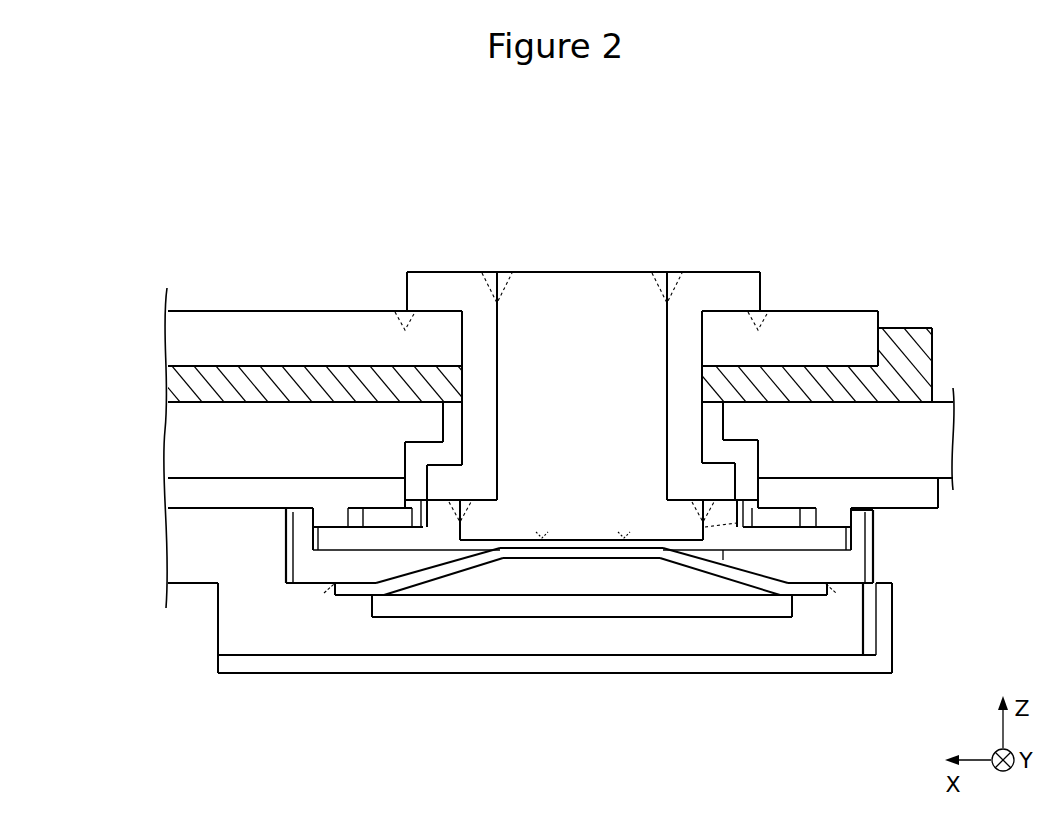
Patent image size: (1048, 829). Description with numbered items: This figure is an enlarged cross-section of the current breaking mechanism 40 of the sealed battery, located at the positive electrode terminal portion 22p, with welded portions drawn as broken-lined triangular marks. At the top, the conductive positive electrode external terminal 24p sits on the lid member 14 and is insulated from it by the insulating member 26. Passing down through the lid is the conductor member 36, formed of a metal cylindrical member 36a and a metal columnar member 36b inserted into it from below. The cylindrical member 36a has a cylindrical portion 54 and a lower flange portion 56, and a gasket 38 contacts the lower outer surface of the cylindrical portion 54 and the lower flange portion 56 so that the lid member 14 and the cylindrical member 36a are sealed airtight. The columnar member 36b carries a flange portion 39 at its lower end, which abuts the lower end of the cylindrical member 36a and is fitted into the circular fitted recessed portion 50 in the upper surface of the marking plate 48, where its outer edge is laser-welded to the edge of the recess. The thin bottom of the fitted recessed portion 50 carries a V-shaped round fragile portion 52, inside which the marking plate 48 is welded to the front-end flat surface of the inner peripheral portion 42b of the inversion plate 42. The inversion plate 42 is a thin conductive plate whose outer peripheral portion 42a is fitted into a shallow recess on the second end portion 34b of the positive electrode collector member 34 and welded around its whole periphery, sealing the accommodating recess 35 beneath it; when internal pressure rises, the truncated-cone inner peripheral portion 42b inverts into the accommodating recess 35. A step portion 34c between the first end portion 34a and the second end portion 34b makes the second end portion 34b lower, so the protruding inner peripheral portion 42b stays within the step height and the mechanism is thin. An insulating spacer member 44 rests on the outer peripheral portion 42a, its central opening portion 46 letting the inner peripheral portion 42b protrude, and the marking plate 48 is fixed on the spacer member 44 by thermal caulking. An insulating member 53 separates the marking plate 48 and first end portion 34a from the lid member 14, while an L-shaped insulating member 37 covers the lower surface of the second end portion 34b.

The positive electrode terminal portion 22p is at (360, 225).
The conductor member 36 is at (581, 326).
The cylindrical member 36a is at (455, 271).
The columnar member 36b is at (665, 350).
The gasket 38 is at (724, 423).
The flange portion 39 is at (750, 526).
The positive electrode external terminal 24p is at (178, 330).
The insulating member 26 is at (178, 383).
The lid member 14 is at (178, 438).
The insulating member 53 is at (178, 492).
The cylindrical portion 54 is at (485, 410).
The lower flange portion 56 is at (445, 466).
The fitted recessed portion 50 is at (577, 520).
The fragile portion 52 is at (522, 536).
The marking plate 48 is at (862, 533).
The current breaking mechanism 40 is at (935, 552).
The spacer member 44 is at (878, 565).
The inversion plate 42 is at (473, 580).
The outer peripheral portion 42a is at (338, 592).
The inner peripheral portion 42b is at (534, 560).
The accommodating recess 35 is at (672, 607).
The opening portion 46 is at (722, 554).
The positive electrode collector member 34 is at (207, 628).
The first end portion 34a is at (178, 545).
The second end portion 34b is at (362, 642).
The step portion 34c is at (284, 557).
The insulating member 37 is at (623, 676).